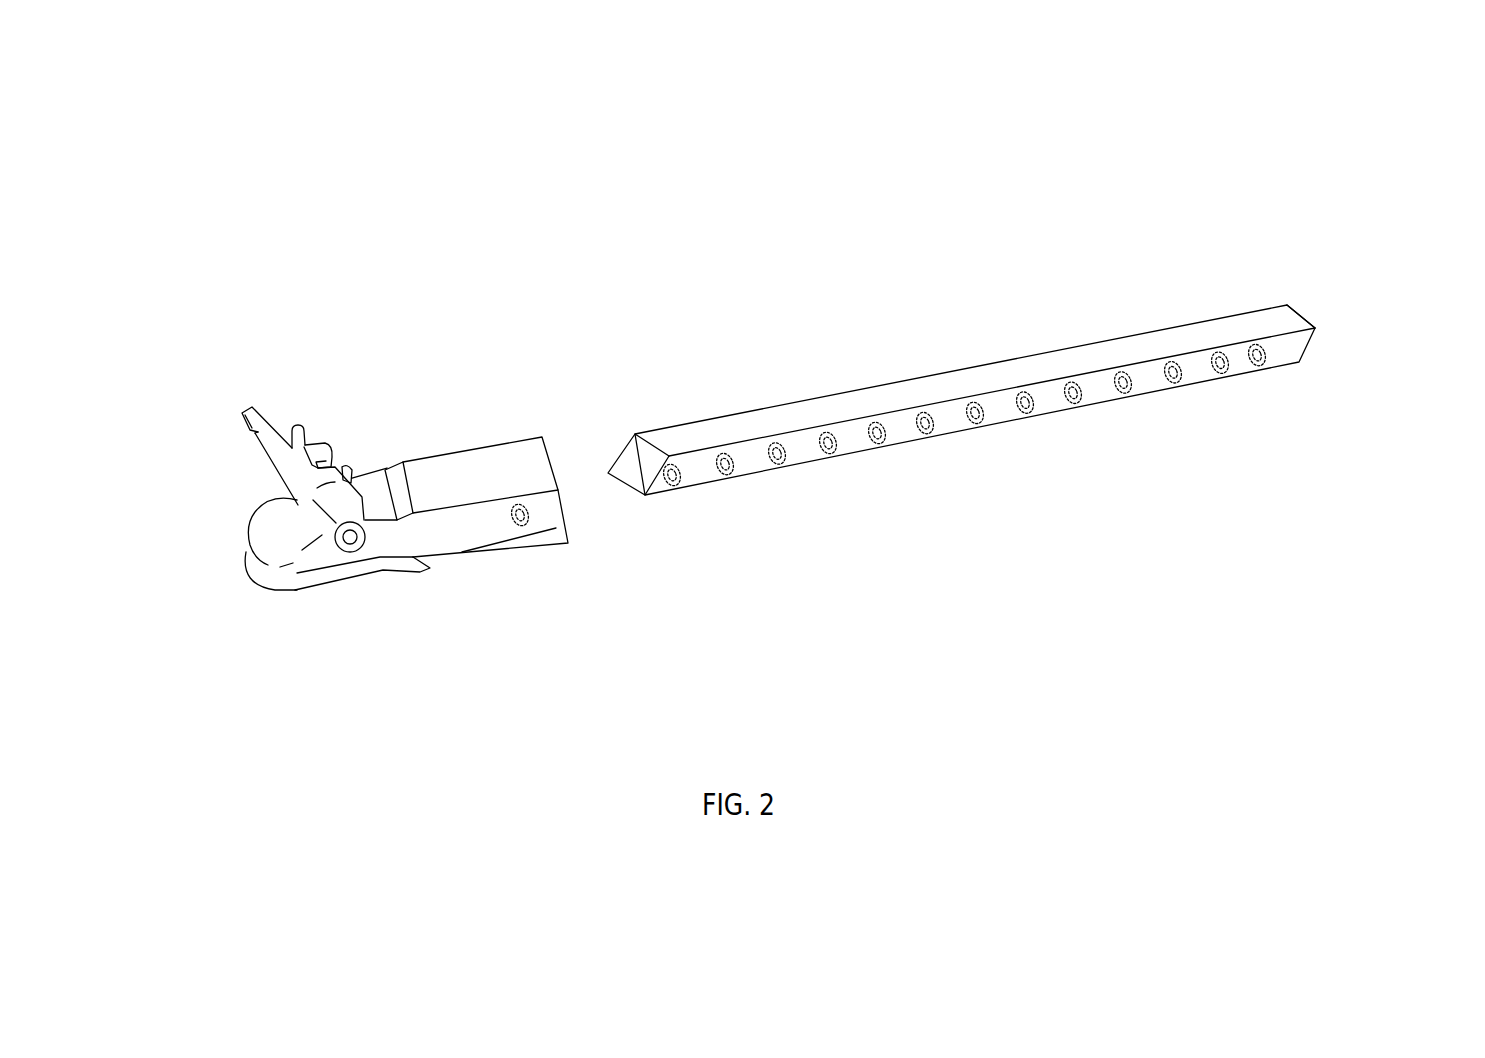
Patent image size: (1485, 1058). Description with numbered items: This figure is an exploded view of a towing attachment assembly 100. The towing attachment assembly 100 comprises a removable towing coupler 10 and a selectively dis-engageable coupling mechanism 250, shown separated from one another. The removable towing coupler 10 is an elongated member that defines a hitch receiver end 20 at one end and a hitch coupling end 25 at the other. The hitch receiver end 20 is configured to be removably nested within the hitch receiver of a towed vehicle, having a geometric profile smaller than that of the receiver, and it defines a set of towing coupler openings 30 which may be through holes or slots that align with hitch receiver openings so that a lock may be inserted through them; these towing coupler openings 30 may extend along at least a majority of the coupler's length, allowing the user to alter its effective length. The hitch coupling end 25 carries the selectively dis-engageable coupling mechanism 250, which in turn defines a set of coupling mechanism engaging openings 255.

The towing attachment assembly 100 is at (1363, 168).
The removable towing coupler 10 is at (1042, 477).
The hitch receiver end 20 is at (1245, 271).
The hitch coupling end 25 is at (633, 291).
The towing coupler openings 30 is at (1257, 363).
The selectively dis-engageable coupling mechanism 250 is at (205, 532).
The coupling mechanism engaging openings 255 is at (515, 526).